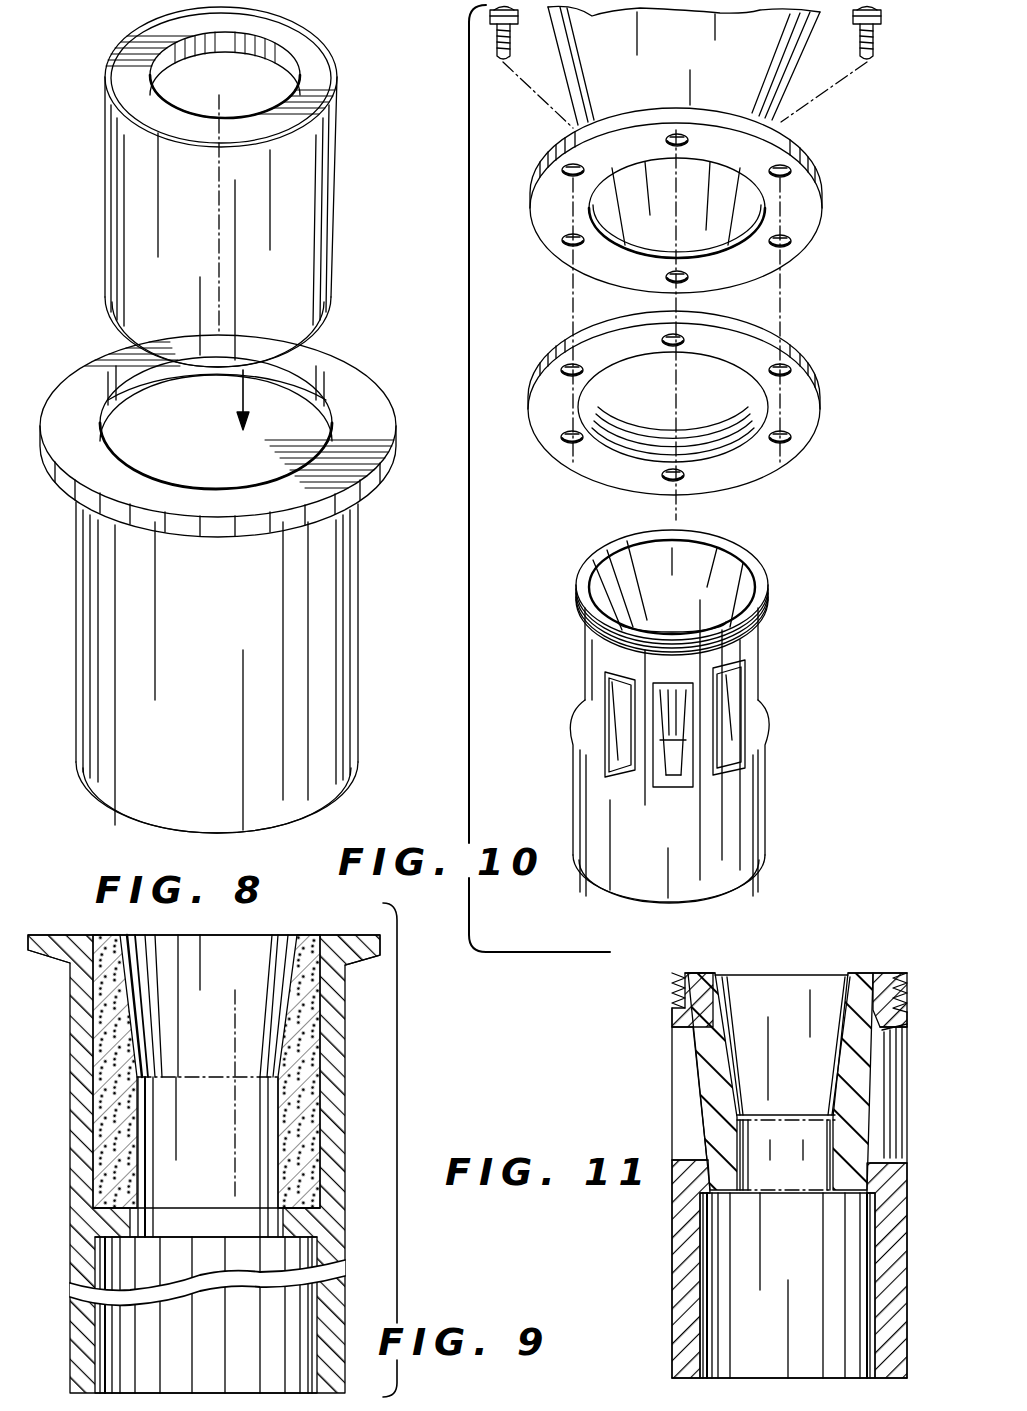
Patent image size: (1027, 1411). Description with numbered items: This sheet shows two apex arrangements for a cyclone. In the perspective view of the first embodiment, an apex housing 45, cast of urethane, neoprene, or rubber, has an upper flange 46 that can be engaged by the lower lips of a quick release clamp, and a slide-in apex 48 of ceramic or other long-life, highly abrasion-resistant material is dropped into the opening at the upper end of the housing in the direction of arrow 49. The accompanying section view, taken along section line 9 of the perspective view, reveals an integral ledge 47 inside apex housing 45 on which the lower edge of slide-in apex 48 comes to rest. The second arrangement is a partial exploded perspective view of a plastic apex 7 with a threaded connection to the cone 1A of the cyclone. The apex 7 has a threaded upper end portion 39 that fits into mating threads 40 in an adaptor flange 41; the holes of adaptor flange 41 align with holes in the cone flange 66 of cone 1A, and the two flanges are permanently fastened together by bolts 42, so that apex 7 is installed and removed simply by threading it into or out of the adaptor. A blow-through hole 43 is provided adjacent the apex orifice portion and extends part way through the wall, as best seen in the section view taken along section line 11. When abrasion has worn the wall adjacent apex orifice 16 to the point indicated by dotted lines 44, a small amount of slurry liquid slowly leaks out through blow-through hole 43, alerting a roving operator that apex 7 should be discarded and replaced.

In FIG. 10, the cone 1A is at (792, 72).
In FIG. 10, the apex 7 is at (757, 782).
In FIG. 11, the apex 7 is at (900, 1194).
In FIG. 8, the section line 9— 9 is at (219, 0).
In FIG. 10, the section line 11— 11 is at (672, 520).
In FIG. 11, the apex orifice 16 is at (740, 1192).
In FIG. 10, the threaded upper end portion 39 is at (766, 606).
In FIG. 10, the mating threads 40 is at (708, 448).
In FIG. 10, the adaptor flange 41 is at (808, 402).
In FIG. 10, the bolts 42 is at (880, 34).
In FIG. 10, the blow-through hole 43 is at (622, 700).
In FIG. 11, the blow-through hole 43 is at (857, 1062).
In FIG. 11, the dotted lines 44 is at (842, 1086).
In FIG. 8, the apex housing 45 is at (370, 638).
In FIG. 9, the apex housing 45 is at (338, 1118).
In FIG. 8, the upper flange 46 is at (388, 466).
In FIG. 9, the upper flange 46 is at (360, 955).
In FIG. 9, the integral ledge 47 is at (108, 1225).
In FIG. 8, the slide-in apex 48 is at (350, 210).
In FIG. 9, the slide-in apex 48 is at (120, 945).
In FIG. 8, the arrow 49 is at (246, 385).
In FIG. 10, the cone flange 66 is at (810, 205).